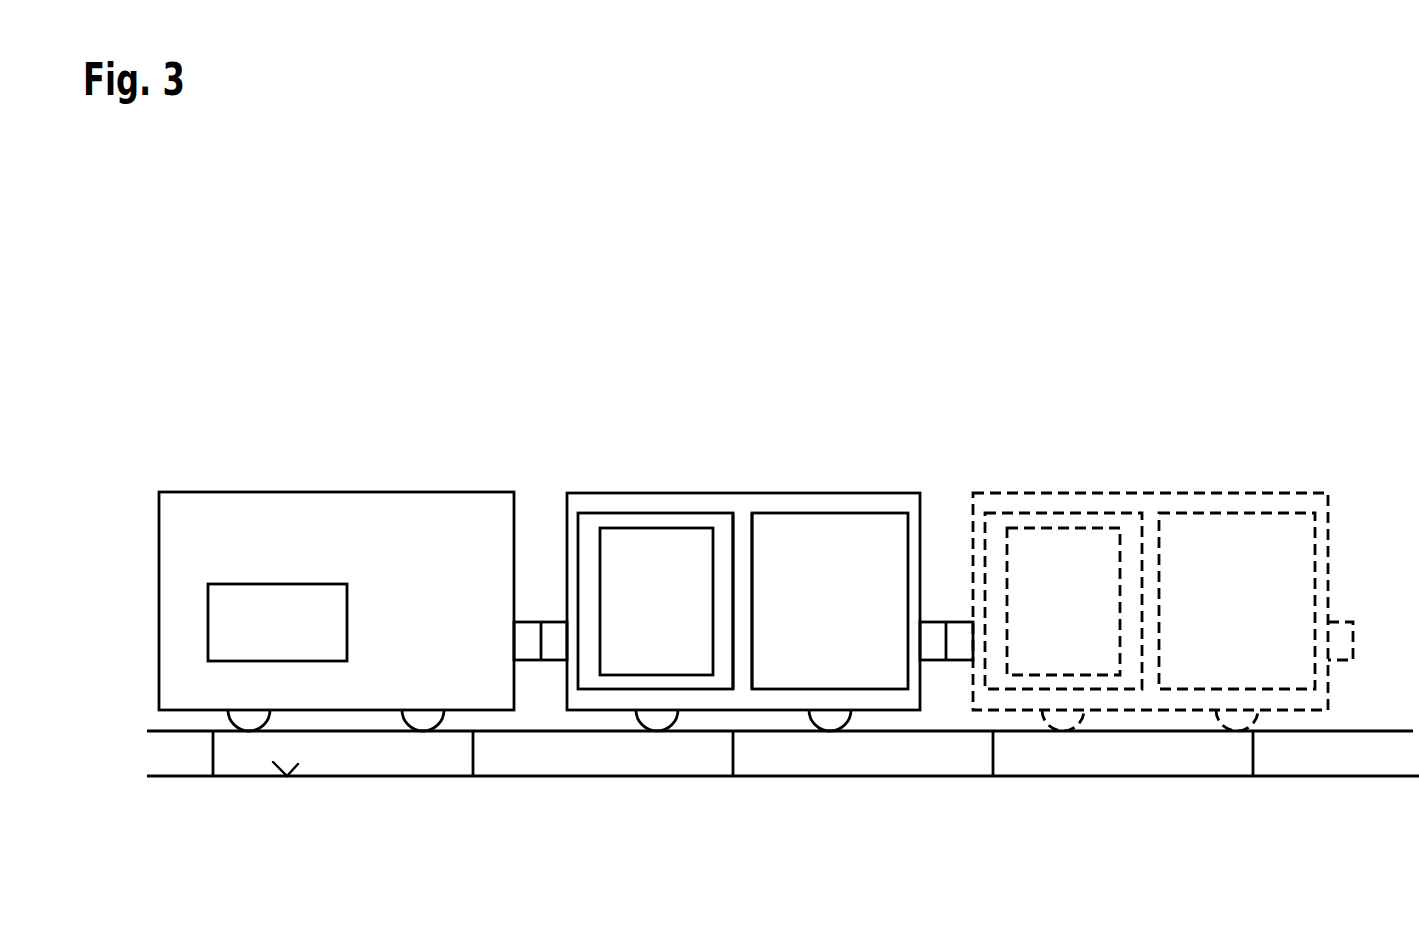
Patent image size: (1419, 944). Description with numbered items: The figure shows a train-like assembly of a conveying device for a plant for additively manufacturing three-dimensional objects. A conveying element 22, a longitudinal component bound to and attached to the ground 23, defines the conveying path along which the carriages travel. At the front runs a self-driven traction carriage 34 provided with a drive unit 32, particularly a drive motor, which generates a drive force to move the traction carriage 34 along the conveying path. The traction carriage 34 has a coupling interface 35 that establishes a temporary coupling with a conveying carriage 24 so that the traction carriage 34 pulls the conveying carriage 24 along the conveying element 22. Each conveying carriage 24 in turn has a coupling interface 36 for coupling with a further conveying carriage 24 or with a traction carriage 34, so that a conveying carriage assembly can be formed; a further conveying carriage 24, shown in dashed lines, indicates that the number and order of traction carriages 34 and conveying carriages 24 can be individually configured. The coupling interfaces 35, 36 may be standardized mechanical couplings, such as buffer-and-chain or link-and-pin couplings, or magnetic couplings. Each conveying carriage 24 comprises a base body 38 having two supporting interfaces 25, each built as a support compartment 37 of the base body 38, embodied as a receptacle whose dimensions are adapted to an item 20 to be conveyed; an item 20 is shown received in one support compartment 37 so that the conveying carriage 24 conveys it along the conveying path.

The item 20 is at (600, 520).
The conveying element 22 is at (333, 731).
The ground 23 is at (277, 777).
The conveying carriage 24 is at (711, 493).
The supporting interface 25 is at (954, 552).
The drive unit 32 is at (266, 584).
The traction carriage 34 is at (338, 492).
The coupling interface 35 is at (525, 653).
The coupling interface 36 is at (554, 653).
The support compartment 37 is at (632, 513).
The base body 38 is at (743, 520).